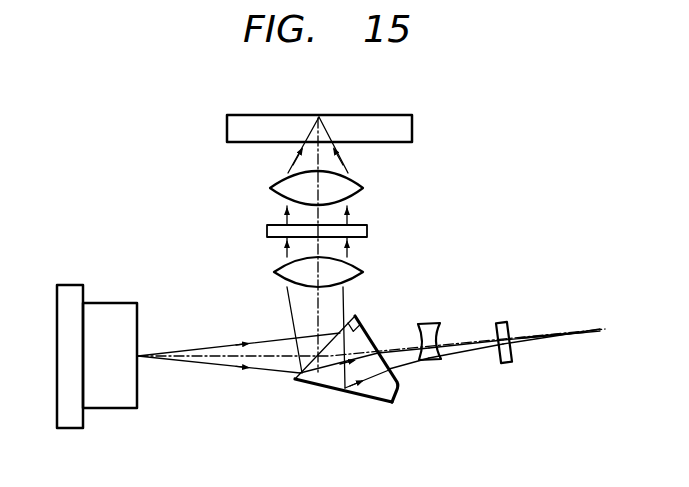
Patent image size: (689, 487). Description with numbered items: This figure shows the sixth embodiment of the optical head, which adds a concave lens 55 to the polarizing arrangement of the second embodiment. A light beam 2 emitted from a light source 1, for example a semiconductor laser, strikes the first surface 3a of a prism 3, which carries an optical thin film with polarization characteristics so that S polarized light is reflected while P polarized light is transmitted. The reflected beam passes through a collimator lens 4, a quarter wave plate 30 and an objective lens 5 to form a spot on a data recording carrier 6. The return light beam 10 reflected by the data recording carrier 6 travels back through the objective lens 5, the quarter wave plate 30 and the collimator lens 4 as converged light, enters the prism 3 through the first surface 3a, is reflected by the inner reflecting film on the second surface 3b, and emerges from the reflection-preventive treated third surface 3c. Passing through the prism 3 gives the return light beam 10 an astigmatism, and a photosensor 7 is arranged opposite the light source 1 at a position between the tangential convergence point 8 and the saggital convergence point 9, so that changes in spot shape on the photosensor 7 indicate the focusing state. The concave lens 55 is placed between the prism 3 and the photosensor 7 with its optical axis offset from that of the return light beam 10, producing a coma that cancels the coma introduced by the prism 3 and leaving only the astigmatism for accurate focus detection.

The light source 1 is at (113, 302).
The light beam 2 is at (237, 367).
The prism 3 is at (371, 365).
The first surface 3a is at (357, 316).
The second surface 3b is at (320, 392).
The third surface 3c is at (400, 378).
The collimator lens 4 is at (363, 269).
The objective lens 5 is at (362, 185).
The data recording carrier 6 is at (278, 116).
The photosensor 7 is at (503, 321).
The tangential convergence point 8 is at (578, 328).
The saggital convergence point 9 is at (460, 341).
The return light beam 10 is at (394, 349).
The ¼ wave plate 30 is at (368, 230).
The concave lens 55 is at (430, 322).